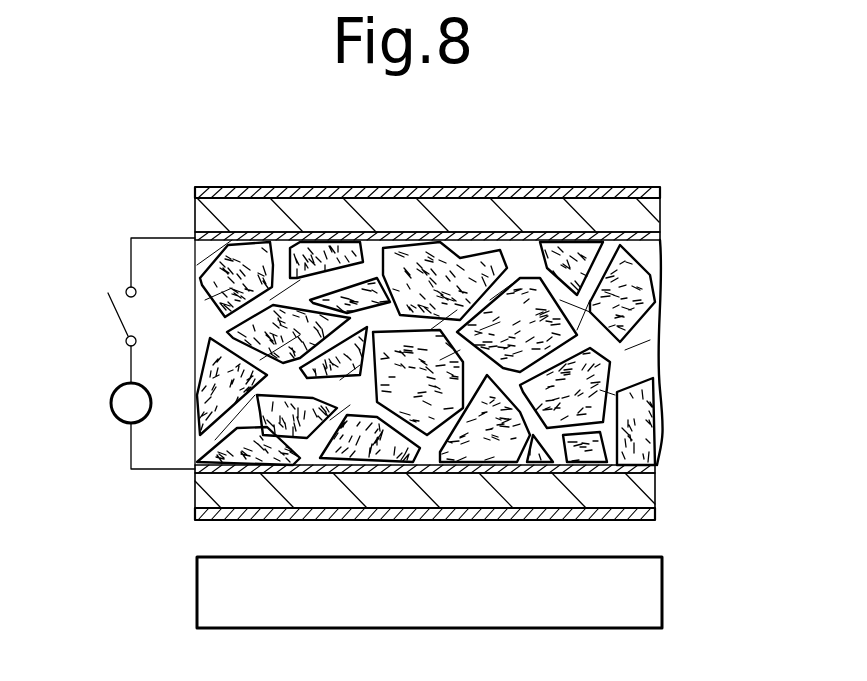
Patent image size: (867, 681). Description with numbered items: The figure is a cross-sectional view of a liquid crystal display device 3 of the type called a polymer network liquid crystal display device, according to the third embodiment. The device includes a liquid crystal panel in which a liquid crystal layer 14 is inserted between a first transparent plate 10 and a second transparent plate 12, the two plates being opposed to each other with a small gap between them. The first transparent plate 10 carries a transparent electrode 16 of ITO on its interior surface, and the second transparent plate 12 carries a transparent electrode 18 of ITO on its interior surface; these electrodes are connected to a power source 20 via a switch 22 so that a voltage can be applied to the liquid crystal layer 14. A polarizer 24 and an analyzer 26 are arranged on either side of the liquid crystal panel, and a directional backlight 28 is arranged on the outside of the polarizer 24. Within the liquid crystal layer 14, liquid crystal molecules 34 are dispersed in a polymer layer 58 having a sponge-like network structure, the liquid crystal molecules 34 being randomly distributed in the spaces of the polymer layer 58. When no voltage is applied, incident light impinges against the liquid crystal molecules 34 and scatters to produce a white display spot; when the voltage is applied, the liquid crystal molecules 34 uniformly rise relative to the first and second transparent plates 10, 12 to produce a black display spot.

The liquid crystal display device 3 is at (610, 99).
The first transparent plate 10 is at (640, 490).
The second transparent plate 12 is at (643, 218).
The liquid crystal layer 14 is at (658, 378).
The transparent electrode 16 is at (198, 487).
The transparent electrode 18 is at (195, 210).
The power source 20 is at (113, 414).
The switch 22 is at (115, 315).
The polarizer 24 is at (642, 520).
The analyzer 26 is at (625, 195).
The directional backlight 28 is at (605, 610).
The liquid crystal molecules 34 is at (458, 278).
The polymer layer 58 is at (540, 275).